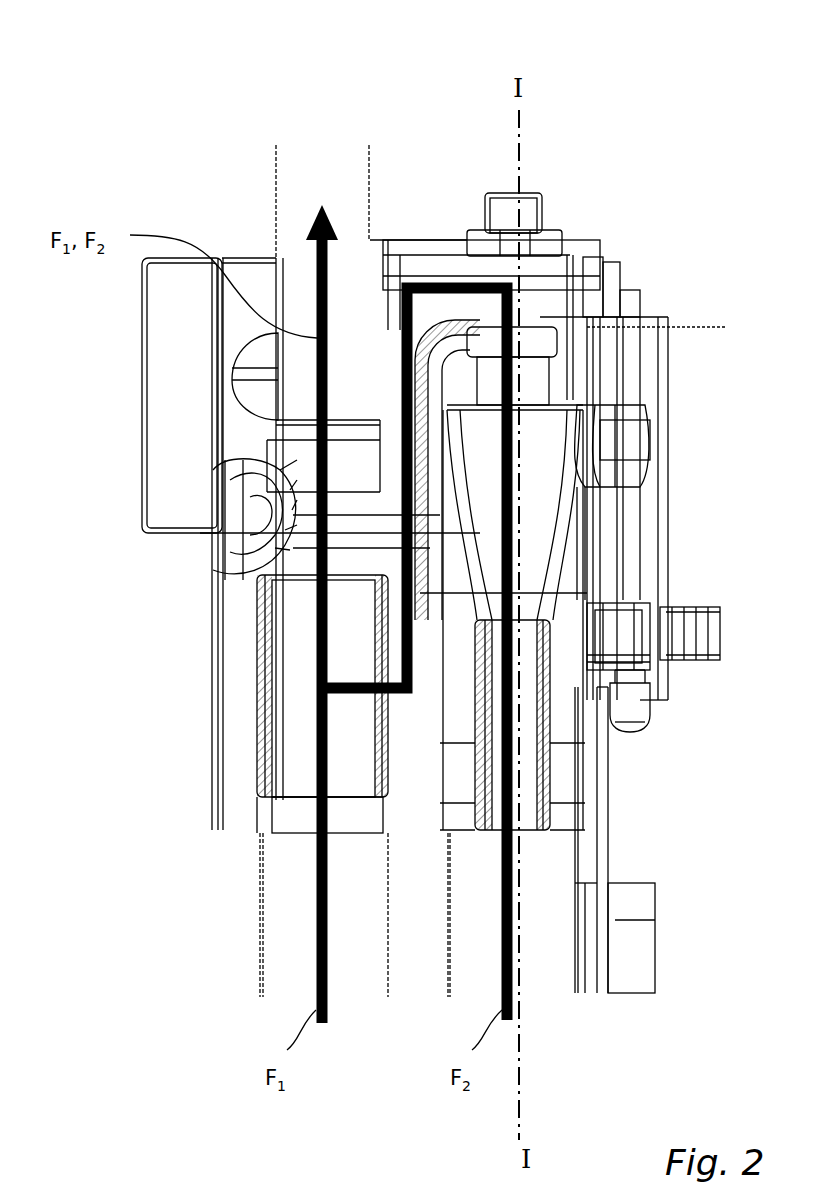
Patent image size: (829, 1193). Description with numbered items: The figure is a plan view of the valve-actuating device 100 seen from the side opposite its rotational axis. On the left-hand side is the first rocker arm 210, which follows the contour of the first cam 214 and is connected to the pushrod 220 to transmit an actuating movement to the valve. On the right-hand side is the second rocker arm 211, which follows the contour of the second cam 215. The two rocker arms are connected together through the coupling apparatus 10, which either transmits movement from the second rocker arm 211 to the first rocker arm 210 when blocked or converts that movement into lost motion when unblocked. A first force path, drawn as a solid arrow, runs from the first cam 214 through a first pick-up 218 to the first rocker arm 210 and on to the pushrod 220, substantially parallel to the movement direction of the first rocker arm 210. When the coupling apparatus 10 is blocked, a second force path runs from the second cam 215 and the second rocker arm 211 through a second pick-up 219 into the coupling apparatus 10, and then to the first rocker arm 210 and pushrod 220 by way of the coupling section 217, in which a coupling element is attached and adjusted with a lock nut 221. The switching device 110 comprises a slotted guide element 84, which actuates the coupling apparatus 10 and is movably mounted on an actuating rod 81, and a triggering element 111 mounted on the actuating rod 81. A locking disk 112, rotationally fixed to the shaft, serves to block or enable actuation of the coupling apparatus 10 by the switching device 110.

The valve-actuating device 100 is at (675, 68).
The pushrod 220 is at (290, 202).
The lock nut 221 is at (547, 240).
The coupling section 217 is at (565, 262).
The slotted guide element 84 is at (667, 327).
The coupling apparatus 10 is at (540, 382).
The second rocker arm 211 is at (557, 465).
The switching device 110 is at (712, 550).
The actuating rod 81 is at (730, 627).
The triggering element 111 is at (653, 715).
The locking disk 112 is at (607, 840).
The first rocker arm 210 is at (280, 568).
The first pick-up 218 is at (277, 783).
The second pick-up 219 is at (475, 813).
The first cam 214 is at (258, 922).
The second cam 215 is at (448, 963).